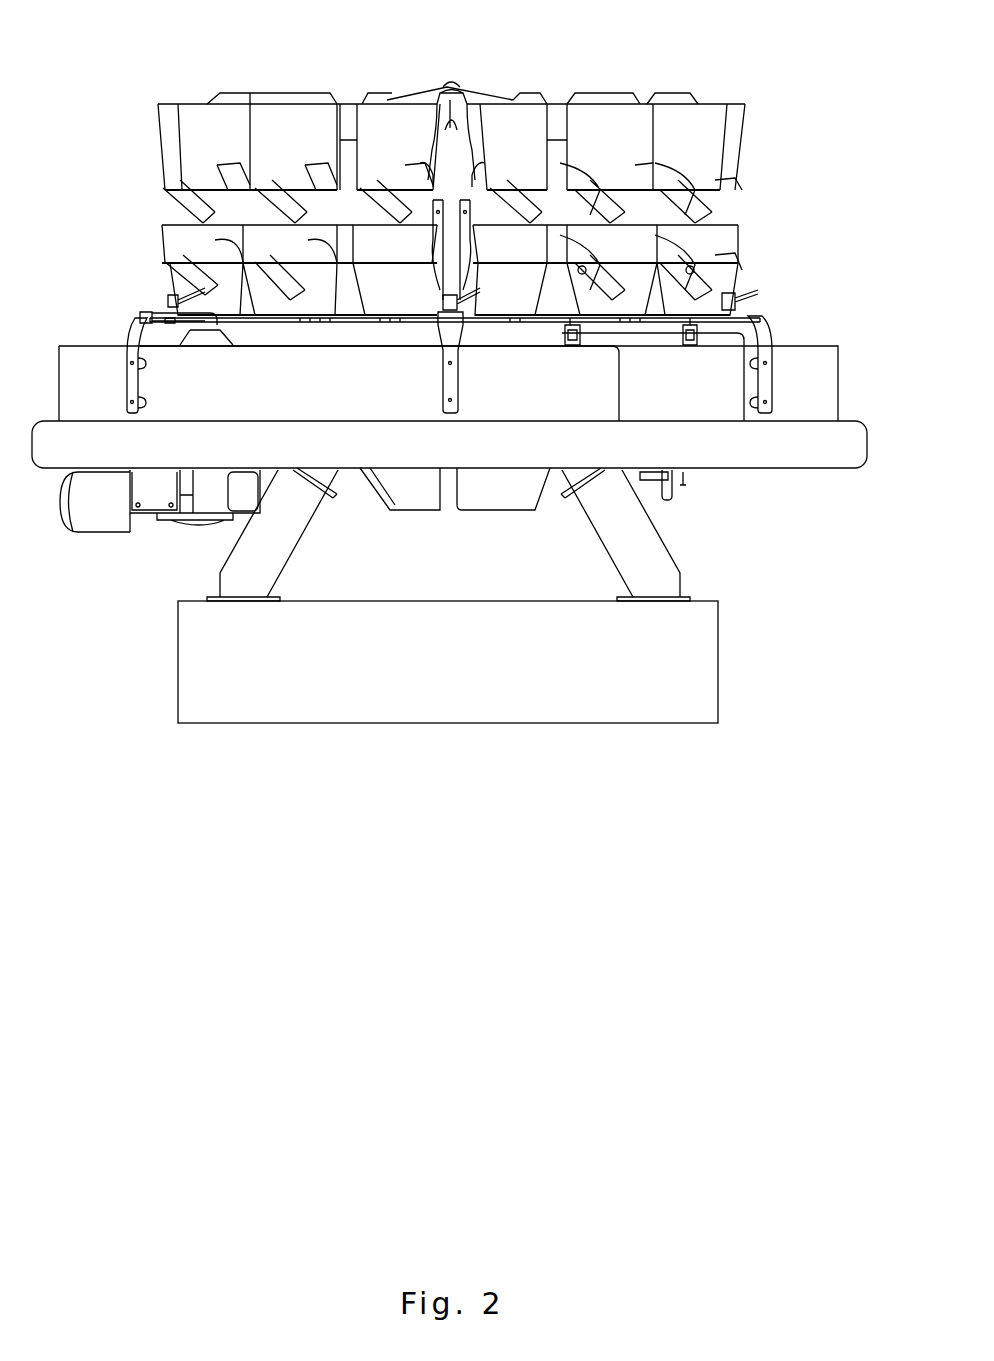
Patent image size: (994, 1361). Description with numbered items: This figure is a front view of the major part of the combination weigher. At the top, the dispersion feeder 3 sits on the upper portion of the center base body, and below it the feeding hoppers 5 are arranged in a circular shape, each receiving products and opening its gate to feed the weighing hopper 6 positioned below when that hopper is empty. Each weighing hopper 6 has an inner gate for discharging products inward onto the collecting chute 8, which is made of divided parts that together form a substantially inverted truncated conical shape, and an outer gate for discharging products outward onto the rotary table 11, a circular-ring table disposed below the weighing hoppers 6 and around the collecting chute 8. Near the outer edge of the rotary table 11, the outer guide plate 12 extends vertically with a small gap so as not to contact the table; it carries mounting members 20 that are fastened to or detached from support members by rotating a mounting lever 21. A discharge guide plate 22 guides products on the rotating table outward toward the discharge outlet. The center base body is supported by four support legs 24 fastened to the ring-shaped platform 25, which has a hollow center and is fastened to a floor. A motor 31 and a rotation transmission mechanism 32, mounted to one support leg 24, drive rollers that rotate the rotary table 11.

The dispersion feeder 3 is at (483, 88).
The feeding hopper 5 is at (703, 174).
The weighing hopper 6 is at (705, 238).
The collecting chute 8 is at (483, 502).
The rotary table 11 is at (815, 462).
The outer guide plate 12 is at (805, 346).
The mounting member 20 is at (763, 386).
The mounting lever 21 is at (737, 284).
The discharge guide plate 22 is at (705, 408).
The support leg 24 is at (658, 554).
The platform 25 is at (488, 723).
The motor 31 is at (68, 518).
The rotation transmission mechanism 32 is at (213, 503).